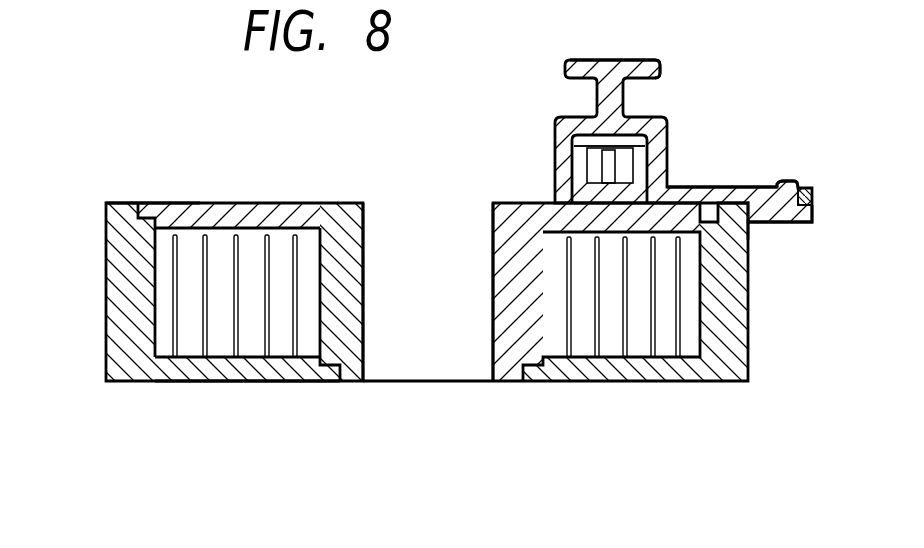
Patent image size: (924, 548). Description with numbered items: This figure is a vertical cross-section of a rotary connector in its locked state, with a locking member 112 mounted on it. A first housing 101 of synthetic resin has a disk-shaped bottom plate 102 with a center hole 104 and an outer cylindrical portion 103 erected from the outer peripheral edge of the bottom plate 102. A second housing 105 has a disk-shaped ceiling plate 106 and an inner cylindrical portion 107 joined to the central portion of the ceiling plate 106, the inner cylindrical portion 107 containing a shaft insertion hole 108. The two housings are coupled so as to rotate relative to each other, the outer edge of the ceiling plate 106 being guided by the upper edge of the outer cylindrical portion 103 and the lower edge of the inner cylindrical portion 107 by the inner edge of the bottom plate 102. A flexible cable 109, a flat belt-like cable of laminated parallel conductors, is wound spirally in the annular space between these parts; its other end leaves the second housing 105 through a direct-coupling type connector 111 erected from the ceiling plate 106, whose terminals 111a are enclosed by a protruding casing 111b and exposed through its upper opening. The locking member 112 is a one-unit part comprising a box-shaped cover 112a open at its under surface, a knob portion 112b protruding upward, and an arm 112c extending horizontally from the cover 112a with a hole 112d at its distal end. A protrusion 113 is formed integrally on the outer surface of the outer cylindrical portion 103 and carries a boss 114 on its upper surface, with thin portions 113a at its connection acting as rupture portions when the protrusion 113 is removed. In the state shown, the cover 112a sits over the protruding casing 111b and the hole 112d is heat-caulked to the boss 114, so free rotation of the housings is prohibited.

The first housing 101 is at (752, 363).
The bottom plate 102 is at (222, 368).
The outer cylindrical portion 103 is at (123, 297).
The center hole 104 is at (510, 383).
The second housing 105 is at (205, 195).
The ceiling plate 106 is at (290, 199).
The inner cylindrical portion 107 is at (318, 333).
The shaft insertion hole 108 is at (421, 368).
The flexible cable 109 is at (172, 338).
The direct-coupling type connector 111 is at (480, 100).
The terminals 111a is at (605, 162).
The protruding casing 111b is at (582, 175).
The locking member 112 is at (651, 53).
The cover 112a is at (666, 133).
The knob portion 112b is at (585, 65).
The arm 112c is at (741, 189).
The hole 112d is at (808, 184).
The protrusion 113 is at (806, 223).
The thin portions 113a is at (750, 224).
The boss 114 is at (800, 186).